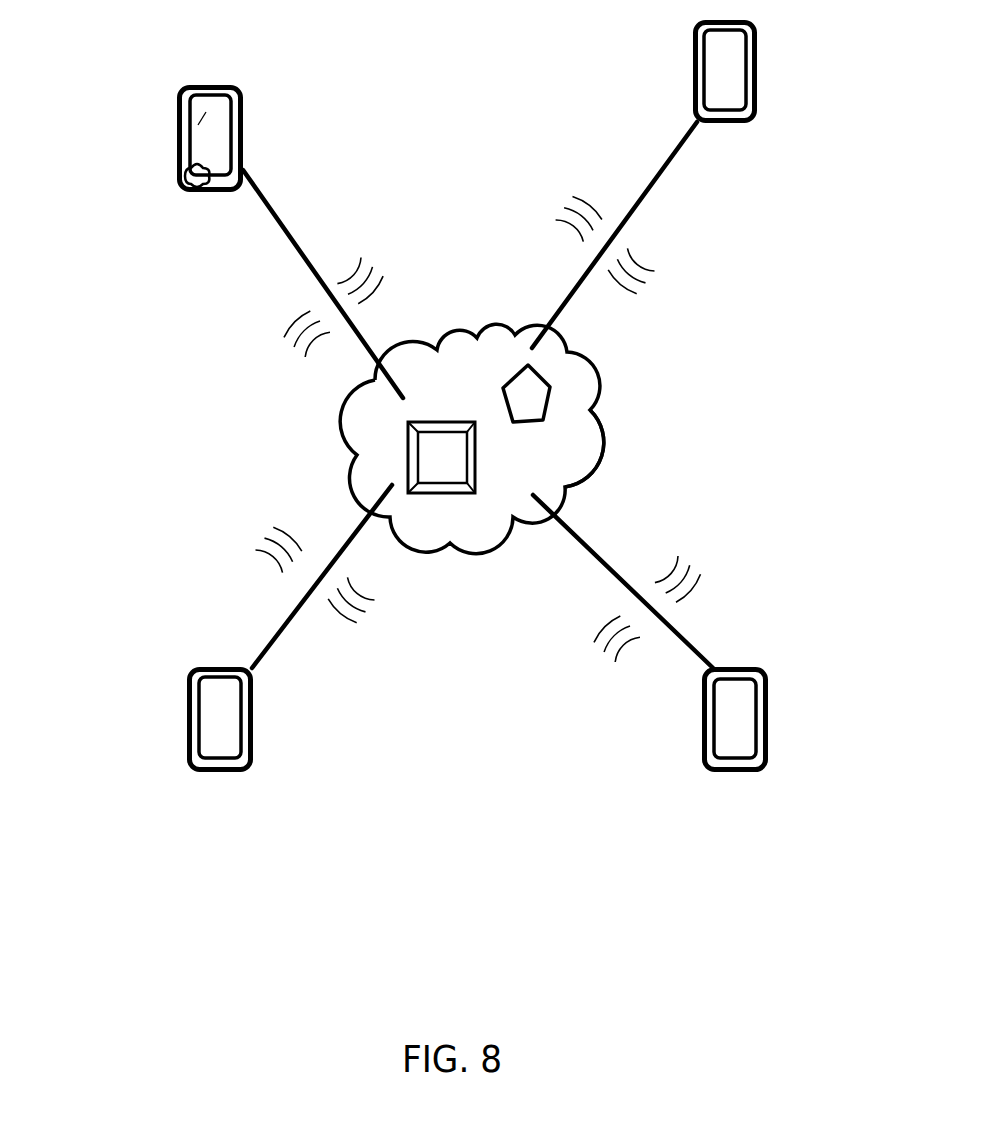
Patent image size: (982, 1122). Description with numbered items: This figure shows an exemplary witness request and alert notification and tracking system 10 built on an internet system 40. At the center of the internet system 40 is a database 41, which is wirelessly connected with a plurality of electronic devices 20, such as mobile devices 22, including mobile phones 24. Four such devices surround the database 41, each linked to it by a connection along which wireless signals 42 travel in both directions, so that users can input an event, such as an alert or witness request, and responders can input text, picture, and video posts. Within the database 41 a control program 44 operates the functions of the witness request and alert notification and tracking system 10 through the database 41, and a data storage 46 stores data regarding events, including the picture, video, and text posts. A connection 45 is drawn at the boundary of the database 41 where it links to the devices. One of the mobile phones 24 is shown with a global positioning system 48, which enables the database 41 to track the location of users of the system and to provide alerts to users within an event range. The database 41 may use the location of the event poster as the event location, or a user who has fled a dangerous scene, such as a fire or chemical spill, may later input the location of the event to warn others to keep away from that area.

The witness request and alert notification and tracking system 10 is at (764, 144).
The electronic devices 20 is at (223, 113).
The mobile device 22 is at (223, 150).
The mobile phone 24 is at (198, 125).
The internet system 40 is at (129, 186).
The database 41 is at (578, 453).
The wireless signals 42 is at (310, 332).
The control program 44 is at (553, 398).
The network connection 45 is at (550, 405).
The data storage 46 is at (425, 452).
The global positioning system 48 is at (212, 174).